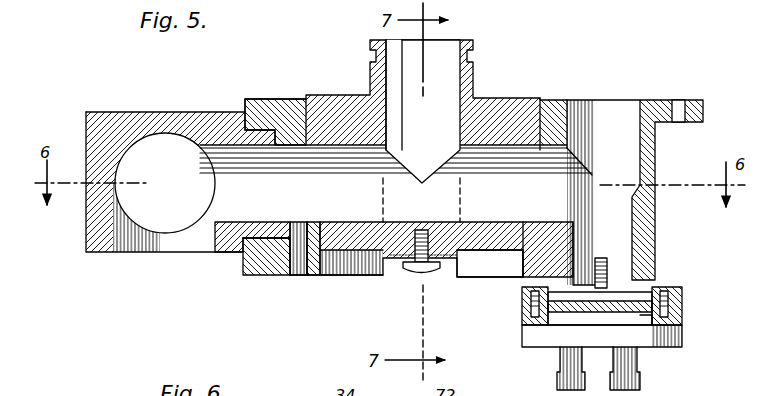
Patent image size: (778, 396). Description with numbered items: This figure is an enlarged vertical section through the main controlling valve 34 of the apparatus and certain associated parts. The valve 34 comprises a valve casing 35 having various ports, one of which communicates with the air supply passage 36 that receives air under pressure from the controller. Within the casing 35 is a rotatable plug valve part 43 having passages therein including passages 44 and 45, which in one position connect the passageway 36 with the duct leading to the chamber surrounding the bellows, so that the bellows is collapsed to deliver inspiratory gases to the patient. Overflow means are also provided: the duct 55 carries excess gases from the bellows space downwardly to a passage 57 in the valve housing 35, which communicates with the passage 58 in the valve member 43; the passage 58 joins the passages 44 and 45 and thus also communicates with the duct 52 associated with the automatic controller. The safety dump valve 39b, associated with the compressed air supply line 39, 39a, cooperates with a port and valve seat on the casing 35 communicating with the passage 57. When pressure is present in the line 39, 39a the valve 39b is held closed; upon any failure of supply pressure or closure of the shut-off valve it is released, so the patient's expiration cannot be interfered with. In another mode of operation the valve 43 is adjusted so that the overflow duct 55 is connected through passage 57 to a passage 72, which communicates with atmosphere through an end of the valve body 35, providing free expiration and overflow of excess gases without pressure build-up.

The valve 34 is at (262, 279).
The valve casing 35 is at (272, 98).
The air supply passage 36 is at (297, 278).
The supply line 39 is at (562, 361).
The supply line 39a is at (640, 376).
The safety dump valve 39b is at (648, 318).
The rotatable plug valve part 43 is at (519, 96).
The passage 44 is at (345, 266).
The passage 45 is at (446, 80).
The duct 52 is at (237, 207).
The duct 55 is at (622, 112).
The passage 57 is at (550, 208).
The passage 58 is at (485, 211).
The passage 72 is at (378, 273).